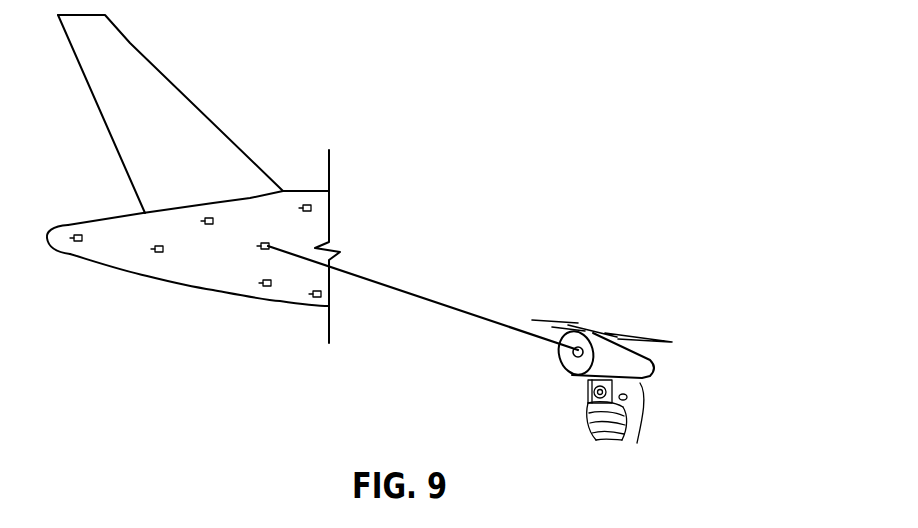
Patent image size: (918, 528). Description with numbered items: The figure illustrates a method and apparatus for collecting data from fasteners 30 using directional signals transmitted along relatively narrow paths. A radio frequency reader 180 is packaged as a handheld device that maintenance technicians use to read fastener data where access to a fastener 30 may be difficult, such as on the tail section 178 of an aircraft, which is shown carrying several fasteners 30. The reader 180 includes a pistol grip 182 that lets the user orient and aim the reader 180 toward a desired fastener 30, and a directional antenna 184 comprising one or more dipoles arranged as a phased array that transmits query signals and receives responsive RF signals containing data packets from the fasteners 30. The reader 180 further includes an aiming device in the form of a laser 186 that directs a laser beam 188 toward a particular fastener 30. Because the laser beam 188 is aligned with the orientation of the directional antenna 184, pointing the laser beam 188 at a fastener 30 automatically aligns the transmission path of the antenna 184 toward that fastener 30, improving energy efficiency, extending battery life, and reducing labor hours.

The fastener 30 is at (76, 233).
The tail section 178 is at (110, 247).
The radio frequency reader 180 is at (670, 370).
The pistol grip 182 is at (588, 398).
The directional antenna 184 is at (623, 338).
The laser 186 is at (645, 379).
The laser beam 188 is at (419, 297).